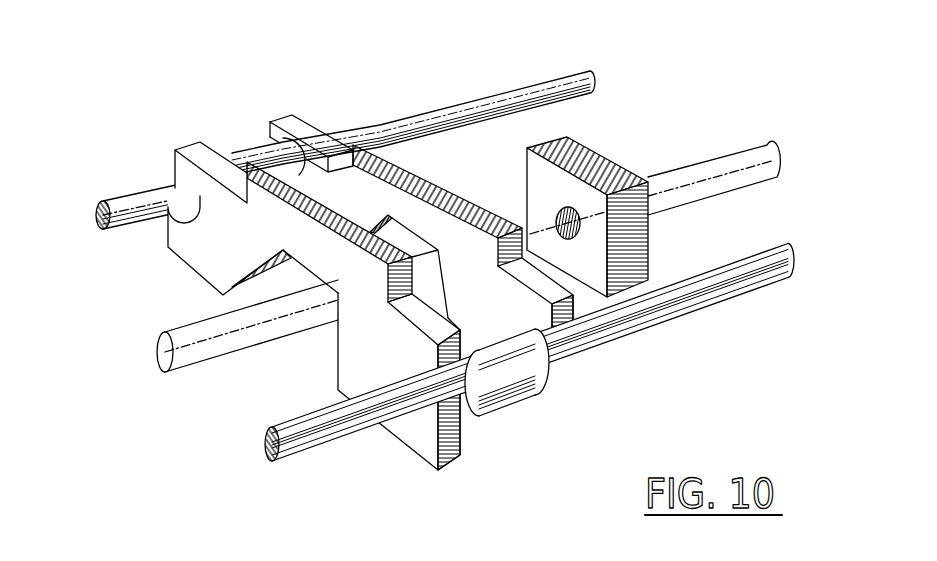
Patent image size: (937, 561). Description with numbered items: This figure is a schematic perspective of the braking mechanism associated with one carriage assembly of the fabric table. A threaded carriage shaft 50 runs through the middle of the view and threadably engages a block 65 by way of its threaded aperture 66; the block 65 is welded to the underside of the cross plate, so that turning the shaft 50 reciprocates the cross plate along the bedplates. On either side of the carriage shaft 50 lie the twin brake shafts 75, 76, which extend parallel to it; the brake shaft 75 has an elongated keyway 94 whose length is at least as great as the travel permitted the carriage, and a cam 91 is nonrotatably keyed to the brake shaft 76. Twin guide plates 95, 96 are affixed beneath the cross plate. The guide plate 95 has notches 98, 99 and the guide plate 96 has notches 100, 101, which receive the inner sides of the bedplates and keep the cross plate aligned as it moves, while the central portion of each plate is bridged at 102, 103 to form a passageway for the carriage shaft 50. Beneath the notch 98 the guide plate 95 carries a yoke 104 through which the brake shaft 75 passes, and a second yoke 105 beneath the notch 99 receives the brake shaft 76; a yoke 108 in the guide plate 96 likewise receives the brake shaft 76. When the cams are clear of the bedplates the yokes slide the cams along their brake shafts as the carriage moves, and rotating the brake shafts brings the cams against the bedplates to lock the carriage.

The shaft 50 is at (203, 350).
The block 65 is at (575, 153).
The threaded aperture 66 is at (580, 223).
The brake shaft 75 is at (132, 203).
The brake shaft 76 is at (266, 448).
The cam 91 is at (512, 387).
The elongated keyway 94 is at (98, 213).
The guide plate 95 is at (321, 188).
The guide plate 96 is at (442, 183).
The notch 98 is at (210, 160).
The notch 99 is at (402, 285).
The notch 100 is at (340, 153).
The notch 101 is at (512, 245).
The bridge 102 is at (262, 280).
The bridge 103 is at (390, 226).
The yoke 104 is at (183, 165).
The yoke 105 is at (425, 448).
The yoke 108 is at (565, 404).